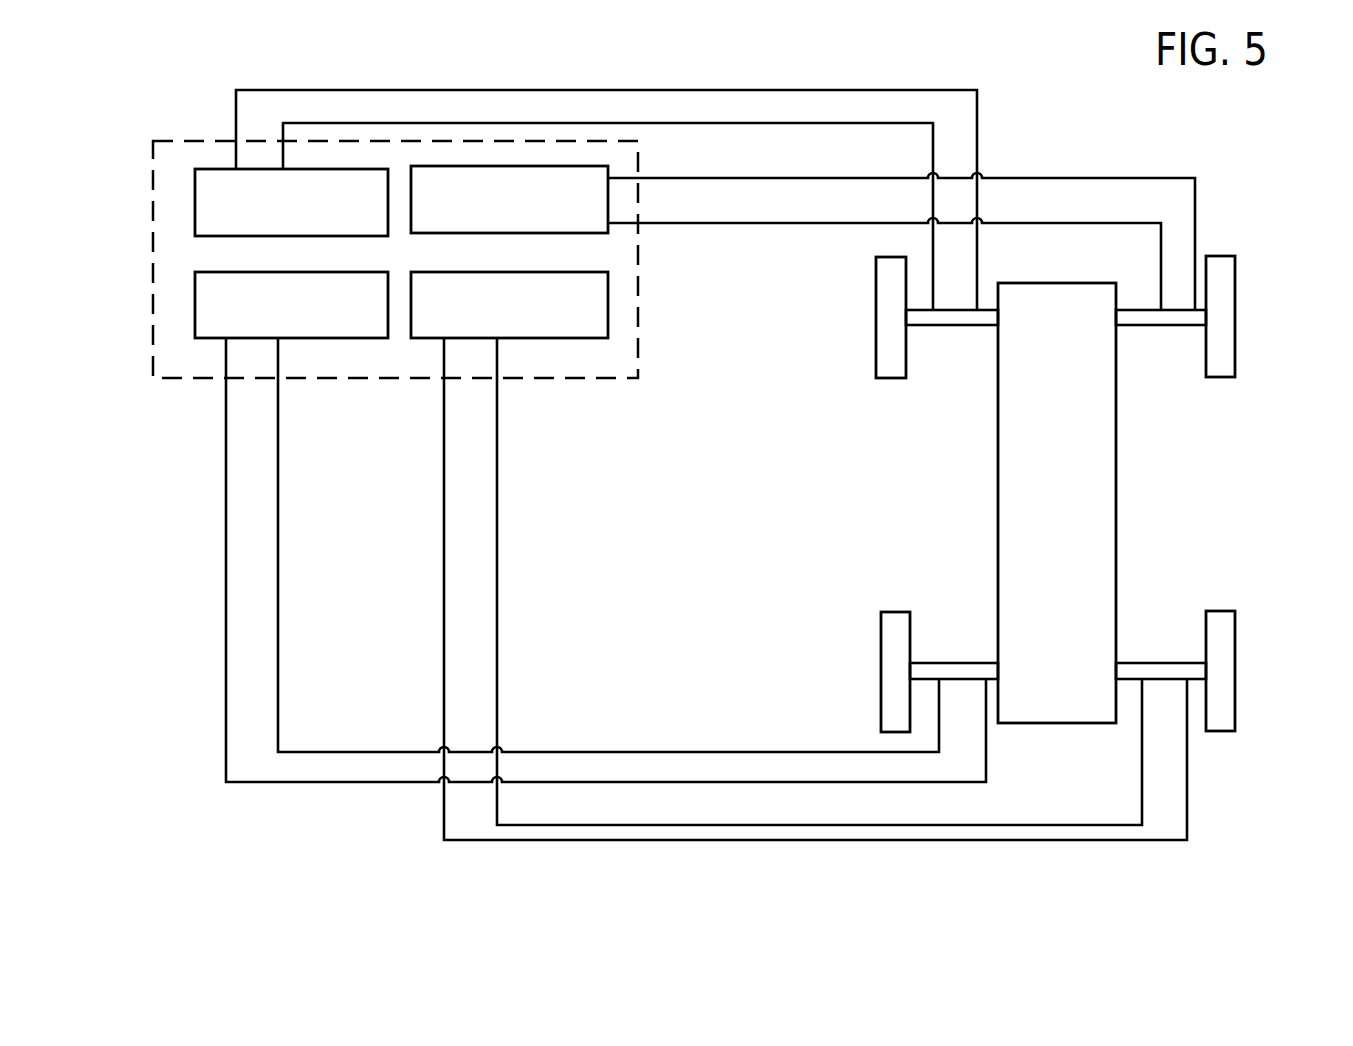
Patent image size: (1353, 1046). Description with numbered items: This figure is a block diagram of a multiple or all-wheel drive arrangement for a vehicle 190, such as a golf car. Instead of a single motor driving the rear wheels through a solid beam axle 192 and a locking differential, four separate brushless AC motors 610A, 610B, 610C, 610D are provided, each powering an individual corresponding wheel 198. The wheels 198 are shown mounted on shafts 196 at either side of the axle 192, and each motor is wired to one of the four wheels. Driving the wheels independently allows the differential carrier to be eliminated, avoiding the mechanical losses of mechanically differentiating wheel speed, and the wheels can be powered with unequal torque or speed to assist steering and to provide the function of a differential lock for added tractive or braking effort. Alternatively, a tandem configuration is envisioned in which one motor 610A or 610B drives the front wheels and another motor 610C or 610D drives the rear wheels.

The vehicle 190 is at (798, 531).
The axle 192 is at (991, 569).
The shafts 196 is at (1180, 326).
The wheels 198 is at (876, 358).
The AC motor 610A is at (358, 226).
The AC motor 610B is at (577, 223).
The AC motor 610C is at (358, 329).
The AC motor 610D is at (577, 329).